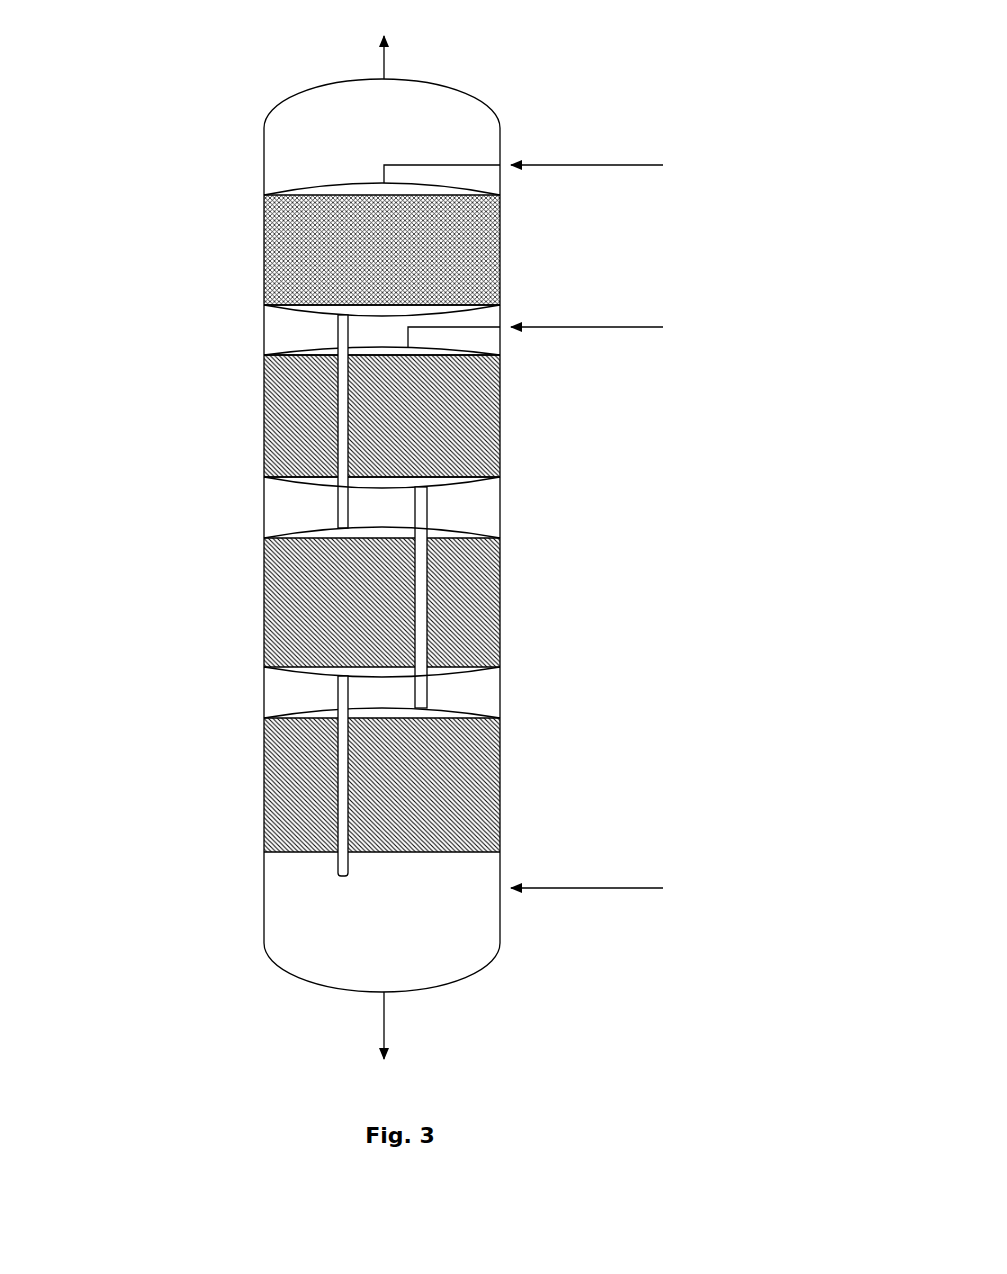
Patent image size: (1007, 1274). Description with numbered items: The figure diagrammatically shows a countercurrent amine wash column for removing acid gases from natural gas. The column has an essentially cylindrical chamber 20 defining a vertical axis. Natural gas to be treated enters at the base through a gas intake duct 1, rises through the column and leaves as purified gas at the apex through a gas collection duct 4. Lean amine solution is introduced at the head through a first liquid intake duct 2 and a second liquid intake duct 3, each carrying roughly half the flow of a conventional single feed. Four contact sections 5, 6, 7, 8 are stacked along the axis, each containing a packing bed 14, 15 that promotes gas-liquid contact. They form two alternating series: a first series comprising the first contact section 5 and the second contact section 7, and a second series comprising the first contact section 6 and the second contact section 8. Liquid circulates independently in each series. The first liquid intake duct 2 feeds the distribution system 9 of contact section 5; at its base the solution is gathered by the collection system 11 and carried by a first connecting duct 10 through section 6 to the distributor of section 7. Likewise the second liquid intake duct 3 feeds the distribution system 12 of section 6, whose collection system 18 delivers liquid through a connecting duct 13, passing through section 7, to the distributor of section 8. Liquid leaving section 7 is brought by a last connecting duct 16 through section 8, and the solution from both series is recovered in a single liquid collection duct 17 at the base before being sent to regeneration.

The gas intake duct 1 is at (570, 877).
The first liquid intake duct 2 is at (583, 153).
The second liquid intake duct 3 is at (587, 313).
The gas collection duct 4 is at (398, 52).
The first contact section of the first series 5 is at (264, 230).
The first contact section of the second series 6 is at (264, 373).
The second contact section of the first series 7 is at (264, 588).
The second contact section of the second series 8 is at (264, 760).
The liquid distribution system 9 is at (313, 187).
The first connecting duct of the first series 10 is at (320, 350).
The liquid collection system 11 is at (427, 313).
The liquid distribution system 12 is at (433, 358).
The first connecting duct of the second series 13 is at (483, 536).
The packing bed 14 is at (337, 241).
The packing bed 15 is at (320, 410).
The last connecting duct 16 is at (345, 835).
The single liquid collection duct 17 is at (398, 1040).
The liquid collection system 18 is at (445, 483).
The chamber 20 is at (518, 632).